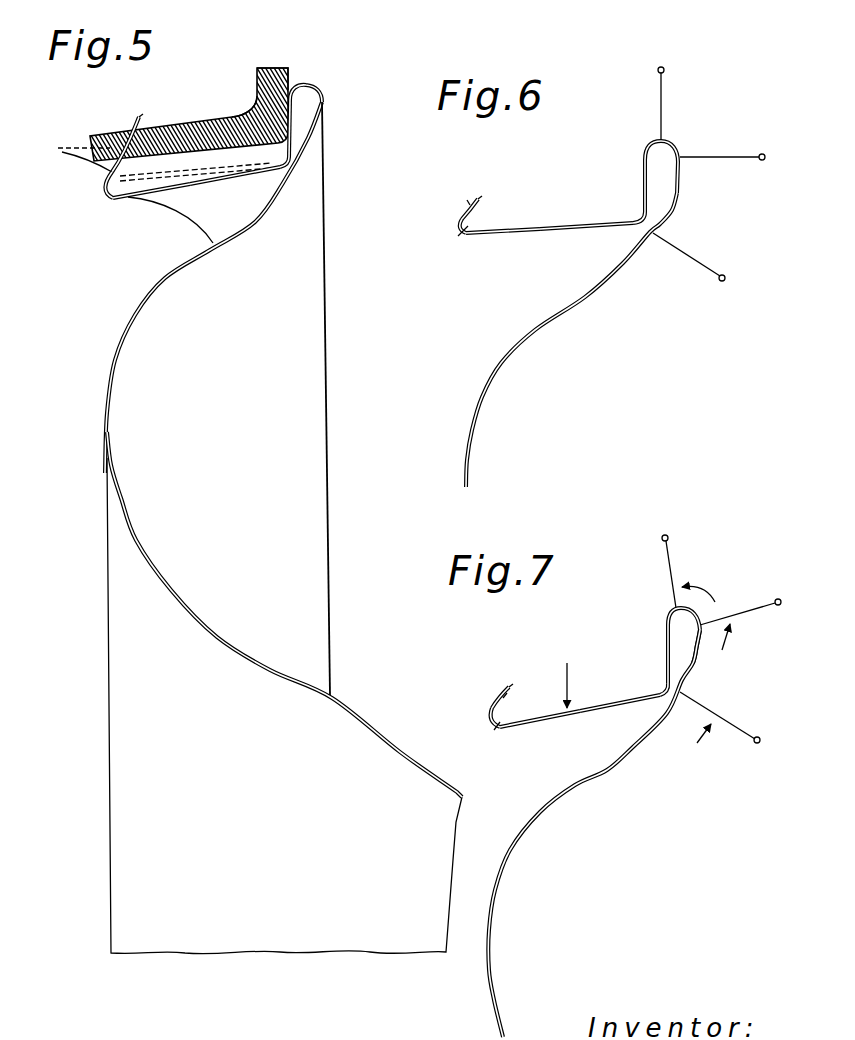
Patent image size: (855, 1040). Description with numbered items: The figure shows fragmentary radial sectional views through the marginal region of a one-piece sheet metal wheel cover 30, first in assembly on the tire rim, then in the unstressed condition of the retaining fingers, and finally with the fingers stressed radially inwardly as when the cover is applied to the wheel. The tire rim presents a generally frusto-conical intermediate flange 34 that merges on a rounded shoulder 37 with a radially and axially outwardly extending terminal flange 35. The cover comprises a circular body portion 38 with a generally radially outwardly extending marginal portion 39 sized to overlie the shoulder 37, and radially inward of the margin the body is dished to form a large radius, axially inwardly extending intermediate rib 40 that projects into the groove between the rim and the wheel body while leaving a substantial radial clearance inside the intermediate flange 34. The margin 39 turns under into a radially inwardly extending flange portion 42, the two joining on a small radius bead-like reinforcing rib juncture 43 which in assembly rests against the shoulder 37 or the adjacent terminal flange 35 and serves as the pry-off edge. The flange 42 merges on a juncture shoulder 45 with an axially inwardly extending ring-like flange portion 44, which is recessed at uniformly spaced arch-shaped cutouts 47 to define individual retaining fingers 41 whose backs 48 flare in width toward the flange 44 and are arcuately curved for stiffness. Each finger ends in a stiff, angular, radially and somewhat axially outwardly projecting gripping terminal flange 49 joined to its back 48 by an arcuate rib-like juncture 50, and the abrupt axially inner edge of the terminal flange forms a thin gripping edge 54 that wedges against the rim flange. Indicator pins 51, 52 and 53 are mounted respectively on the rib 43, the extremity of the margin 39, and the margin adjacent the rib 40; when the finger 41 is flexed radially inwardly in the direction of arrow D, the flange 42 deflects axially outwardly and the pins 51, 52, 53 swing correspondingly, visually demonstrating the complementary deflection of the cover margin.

In FIG. 5, the wheel cover 30 is at (343, 696).
In FIG. 5, the intermediate flange 34 is at (183, 122).
In FIG. 5, the terminal flange 35 is at (287, 70).
In FIG. 5, the rounded shoulder 37 is at (250, 108).
In FIG. 5, the circular body portion 38 is at (272, 675).
In FIG. 5, the marginal portion 39 is at (326, 153).
In FIG. 6, the marginal portion 39 is at (678, 197).
In FIG. 7, the marginal portion 39 is at (694, 664).
In FIG. 5, the intermediate rib portion 40 is at (110, 433).
In FIG. 6, the intermediate rib portion 40 is at (472, 443).
In FIG. 7, the intermediate rib portion 40 is at (492, 930).
In FIG. 6, the retaining finger 41 is at (461, 241).
In FIG. 7, the retaining finger 41 is at (494, 730).
In FIG. 5, the underturned flange portion 42 is at (297, 123).
In FIG. 6, the underturned flange portion 42 is at (642, 183).
In FIG. 7, the underturned flange portion 42 is at (667, 637).
In FIG. 5, the reinforcing rib juncture 43 is at (310, 87).
In FIG. 6, the reinforcing rib juncture 43 is at (670, 143).
In FIG. 7, the reinforcing rib juncture 43 is at (709, 599).
In FIG. 5, the finger-carrying flange portion 44 is at (268, 175).
In FIG. 6, the finger-carrying flange portion 44 is at (587, 230).
In FIG. 7, the finger-carrying flange portion 44 is at (663, 662).
In FIG. 5, the juncture shoulder 45 is at (280, 185).
In FIG. 6, the juncture shoulder 45 is at (633, 230).
In FIG. 7, the juncture shoulder 45 is at (660, 694).
In FIG. 5, the recess 47 is at (106, 211).
In FIG. 5, the finger back 48 is at (139, 199).
In FIG. 6, the finger back 48 is at (503, 233).
In FIG. 7, the finger back 48 is at (537, 723).
In FIG. 5, the gripping terminal flange 49 is at (69, 152).
In FIG. 6, the gripping terminal flange 49 is at (467, 200).
In FIG. 7, the gripping terminal flange 49 is at (507, 693).
In FIG. 5, the rib-like juncture 50 is at (104, 192).
In FIG. 6, the rib-like juncture 50 is at (460, 223).
In FIG. 7, the rib-like juncture 50 is at (490, 713).
In FIG. 6, the indicator pin 51 is at (664, 104).
In FIG. 7, the indicator pin 51 is at (672, 553).
In FIG. 6, the indicator pin 52 is at (730, 157).
In FIG. 7, the indicator pin 52 is at (783, 574).
In FIG. 6, the indicator pin 53 is at (717, 268).
In FIG. 7, the indicator pin 53 is at (720, 713).
In FIG. 5, the gripping edge 54 is at (139, 119).
In FIG. 6, the gripping edge 54 is at (479, 198).
In FIG. 7, the gripping edge 54 is at (510, 686).
In FIG. 7, the direction arrow D is at (567, 663).